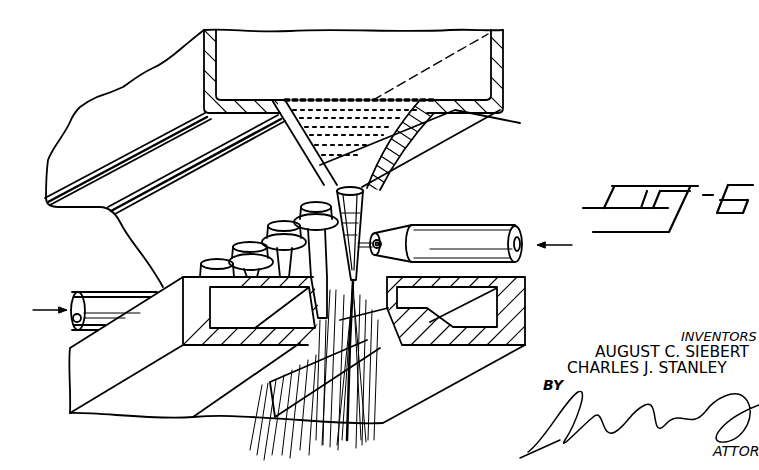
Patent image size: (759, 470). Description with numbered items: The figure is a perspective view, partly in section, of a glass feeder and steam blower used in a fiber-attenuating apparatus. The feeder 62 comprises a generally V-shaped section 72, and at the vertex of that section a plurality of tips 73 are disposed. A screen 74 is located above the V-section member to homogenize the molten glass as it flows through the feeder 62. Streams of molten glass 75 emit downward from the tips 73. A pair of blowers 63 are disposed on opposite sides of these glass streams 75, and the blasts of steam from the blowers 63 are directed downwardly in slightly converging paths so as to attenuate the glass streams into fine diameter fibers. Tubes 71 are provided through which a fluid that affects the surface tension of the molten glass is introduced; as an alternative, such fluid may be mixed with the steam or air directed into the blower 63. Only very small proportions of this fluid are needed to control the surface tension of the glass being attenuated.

The feeder 62 is at (505, 111).
The blower 63 is at (130, 410).
The tube 71 is at (115, 297).
The V-shaped section 72 is at (406, 163).
The tip 73 is at (298, 222).
The screen 74 is at (460, 128).
The stream of molten glass 75 is at (291, 265).